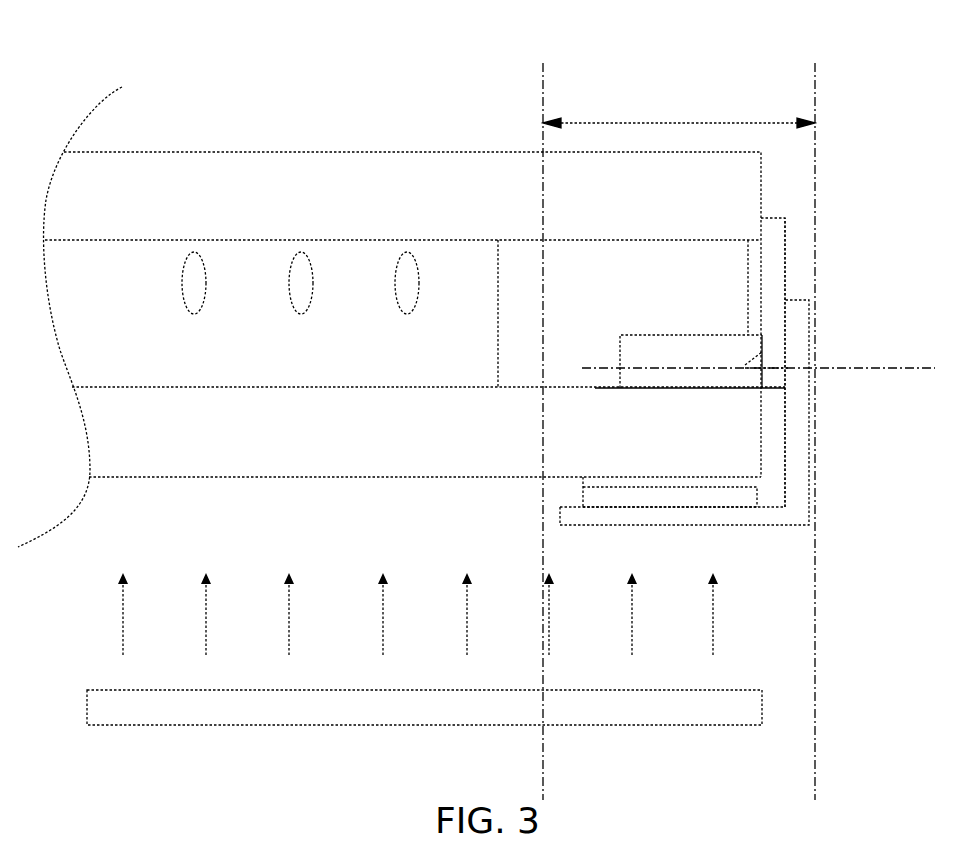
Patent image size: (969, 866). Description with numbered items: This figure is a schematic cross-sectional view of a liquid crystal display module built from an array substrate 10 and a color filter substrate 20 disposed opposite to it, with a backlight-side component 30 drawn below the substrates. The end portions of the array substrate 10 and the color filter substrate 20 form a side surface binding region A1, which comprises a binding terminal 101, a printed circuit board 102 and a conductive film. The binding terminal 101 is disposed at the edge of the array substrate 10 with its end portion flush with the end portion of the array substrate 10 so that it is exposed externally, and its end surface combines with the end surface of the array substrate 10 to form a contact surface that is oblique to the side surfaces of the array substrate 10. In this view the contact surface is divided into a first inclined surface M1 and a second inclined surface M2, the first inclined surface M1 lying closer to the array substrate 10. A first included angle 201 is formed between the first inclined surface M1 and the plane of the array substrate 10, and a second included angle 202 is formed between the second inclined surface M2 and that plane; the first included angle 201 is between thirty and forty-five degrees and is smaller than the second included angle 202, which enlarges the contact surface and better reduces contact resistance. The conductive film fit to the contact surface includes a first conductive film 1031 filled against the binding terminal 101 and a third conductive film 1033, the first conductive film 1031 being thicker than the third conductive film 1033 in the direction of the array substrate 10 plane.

The array substrate 10 is at (742, 446).
The color filter substrate 20 is at (703, 205).
The backlight module 30 is at (732, 713).
The binding terminal 101 is at (672, 343).
The printed circuit board 102 is at (742, 485).
The first conductive film 1031 is at (775, 270).
The third conductive film 1033 is at (745, 500).
The first included angle 201 is at (700, 388).
The second included angle 202 is at (745, 365).
The first inclined surface M1 is at (810, 363).
The second inclined surface M2 is at (700, 388).
The side surface binding region A1 is at (690, 123).